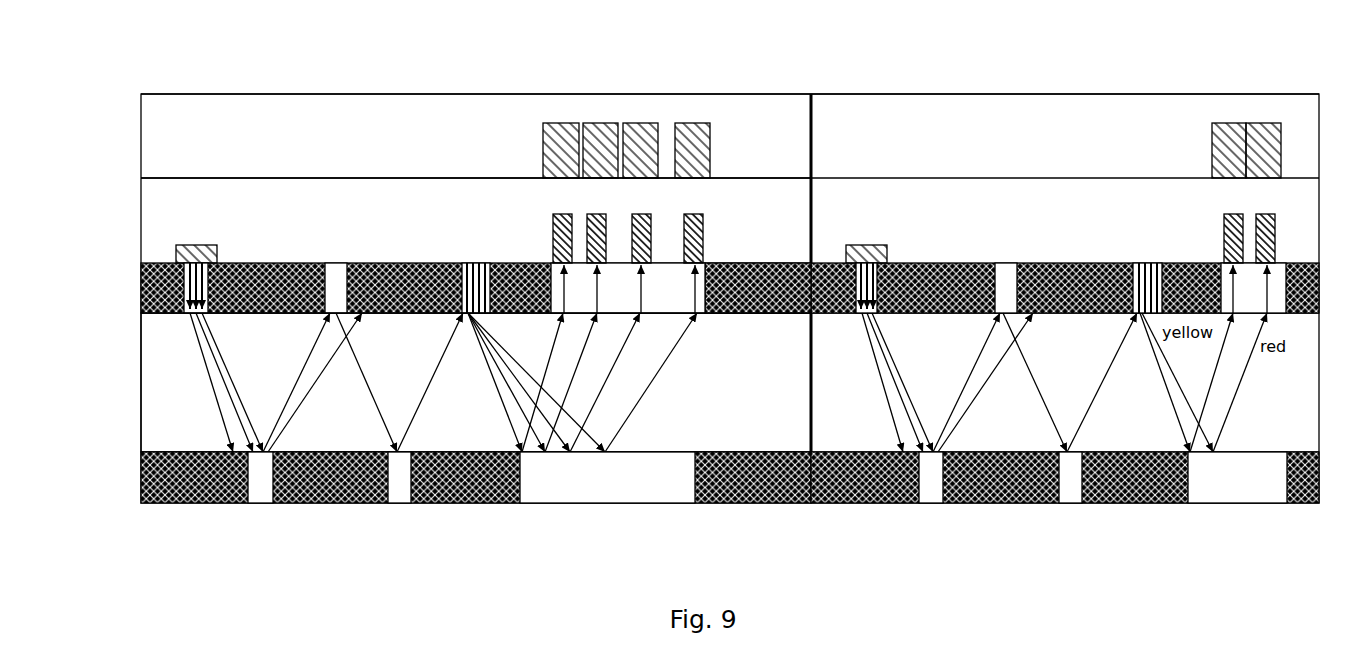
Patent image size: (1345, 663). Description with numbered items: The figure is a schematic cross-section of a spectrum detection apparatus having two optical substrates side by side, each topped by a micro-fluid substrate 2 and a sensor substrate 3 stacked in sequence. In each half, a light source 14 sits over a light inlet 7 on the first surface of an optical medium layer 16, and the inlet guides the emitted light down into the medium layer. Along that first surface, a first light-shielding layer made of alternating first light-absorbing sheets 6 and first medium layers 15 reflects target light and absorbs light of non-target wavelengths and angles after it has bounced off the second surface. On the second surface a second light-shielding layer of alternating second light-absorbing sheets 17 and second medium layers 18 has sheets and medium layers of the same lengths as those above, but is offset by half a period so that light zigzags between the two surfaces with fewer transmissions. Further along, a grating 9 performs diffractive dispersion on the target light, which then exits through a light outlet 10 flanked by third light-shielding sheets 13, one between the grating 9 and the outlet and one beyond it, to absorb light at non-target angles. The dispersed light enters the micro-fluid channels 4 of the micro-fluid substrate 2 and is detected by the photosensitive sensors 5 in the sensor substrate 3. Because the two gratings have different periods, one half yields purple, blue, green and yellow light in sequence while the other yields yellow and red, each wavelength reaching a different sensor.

The micro-fluid substrate 2 is at (162, 218).
The sensor substrate 3 is at (162, 118).
The micro-fluid channel 4 is at (553, 215).
The photosensitive sensor 5 is at (693, 140).
The first light-absorbing sheet 6 is at (141, 283).
The light inlet 7 is at (143, 298).
The grating 9 is at (473, 277).
The light outlet 10 is at (552, 263).
The third light-shielding sheet 13 is at (735, 263).
The light source 14 is at (176, 254).
The first medium layer 15 is at (333, 282).
The optical medium layer 16 is at (175, 383).
The second light-absorbing sheet 17 is at (153, 503).
The second medium layer 18 is at (257, 492).